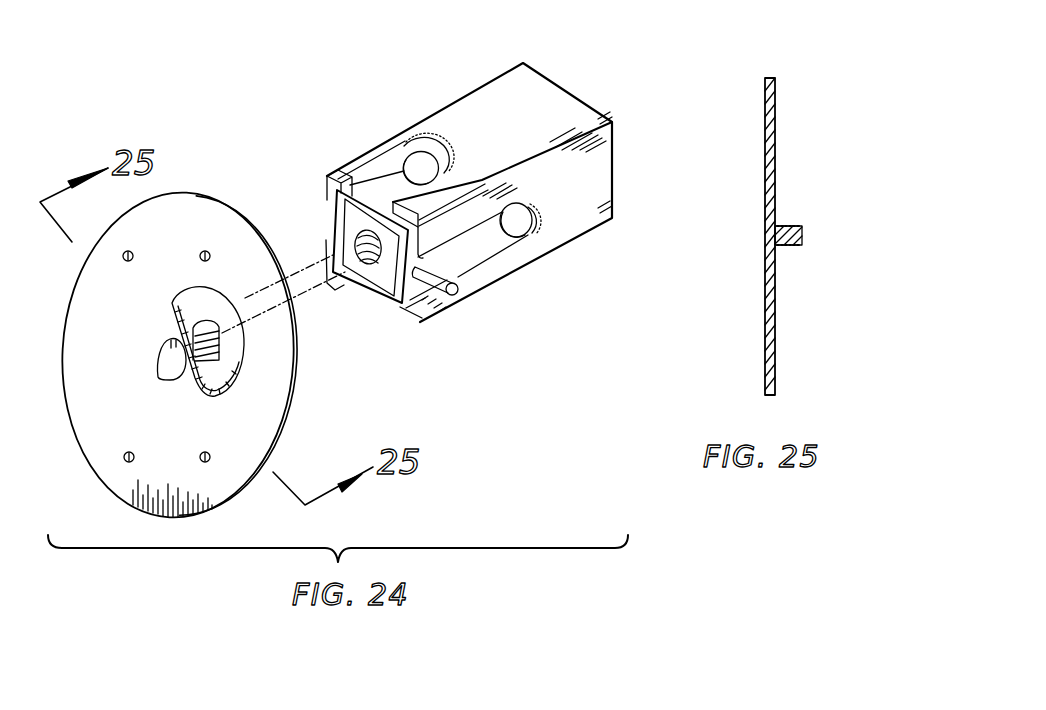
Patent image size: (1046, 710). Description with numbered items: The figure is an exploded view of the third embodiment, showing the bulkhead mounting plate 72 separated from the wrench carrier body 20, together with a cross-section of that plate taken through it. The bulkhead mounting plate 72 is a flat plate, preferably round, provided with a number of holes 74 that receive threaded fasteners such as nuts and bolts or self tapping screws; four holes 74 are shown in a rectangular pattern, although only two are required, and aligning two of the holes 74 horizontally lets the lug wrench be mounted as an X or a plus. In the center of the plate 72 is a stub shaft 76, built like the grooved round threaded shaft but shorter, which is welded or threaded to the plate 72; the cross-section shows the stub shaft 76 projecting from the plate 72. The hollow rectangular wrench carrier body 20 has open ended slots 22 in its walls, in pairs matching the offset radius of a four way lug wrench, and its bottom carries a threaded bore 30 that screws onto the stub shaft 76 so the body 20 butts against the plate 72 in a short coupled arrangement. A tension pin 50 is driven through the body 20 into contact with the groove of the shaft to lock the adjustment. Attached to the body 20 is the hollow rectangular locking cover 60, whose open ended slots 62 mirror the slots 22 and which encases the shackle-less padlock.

In FIG. 24, the wrench carrier body 20 is at (378, 193).
In FIG. 24, the open ended slots 22 is at (400, 160).
In FIG. 24, the threaded bore 30 is at (375, 268).
In FIG. 24, the tension pin 50 is at (472, 300).
In FIG. 24, the locking cover 60 is at (567, 245).
In FIG. 24, the open ended slots 62 is at (445, 140).
In FIG. 24, the bulkhead mounting plate 72 is at (283, 430).
In FIG. 25, the bulkhead mounting plate 72 is at (776, 100).
In FIG. 24, the holes 74 is at (132, 253).
In FIG. 24, the stub shaft 76 is at (212, 337).
In FIG. 25, the stub shaft 76 is at (779, 224).